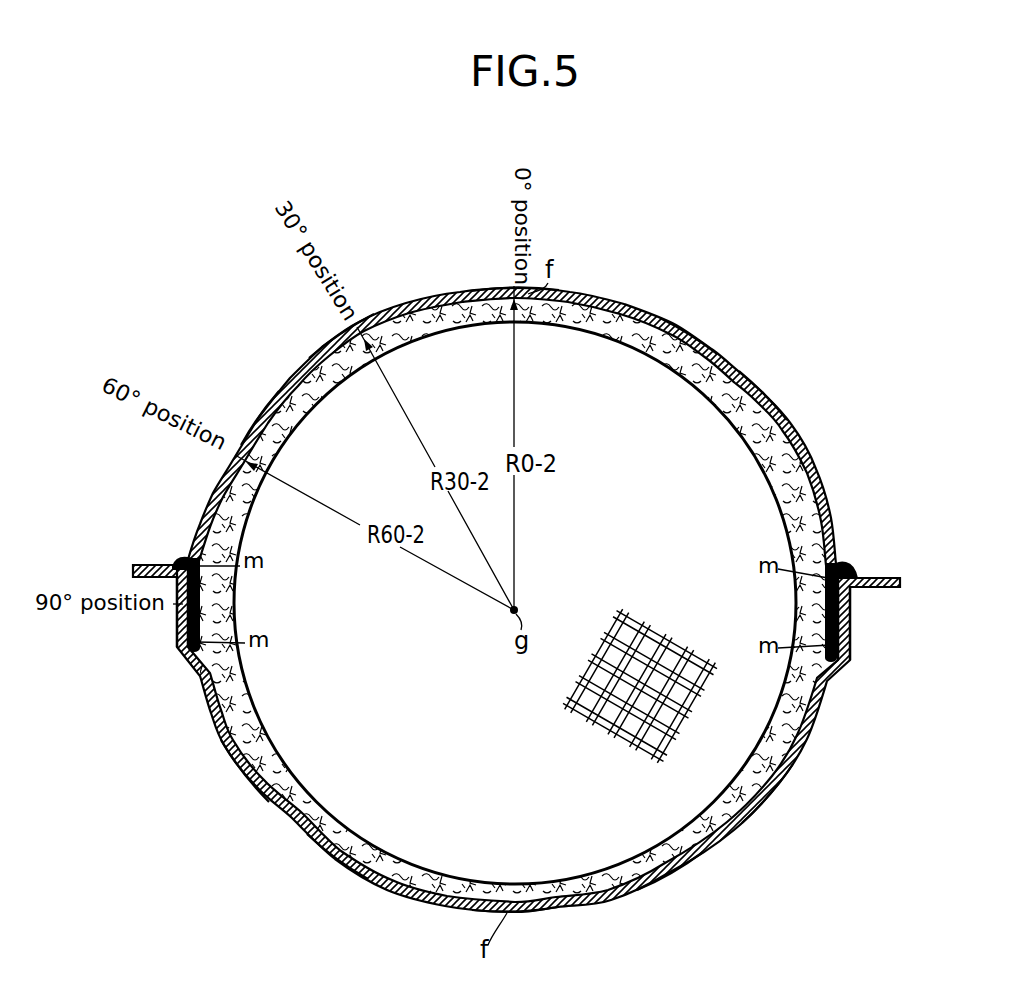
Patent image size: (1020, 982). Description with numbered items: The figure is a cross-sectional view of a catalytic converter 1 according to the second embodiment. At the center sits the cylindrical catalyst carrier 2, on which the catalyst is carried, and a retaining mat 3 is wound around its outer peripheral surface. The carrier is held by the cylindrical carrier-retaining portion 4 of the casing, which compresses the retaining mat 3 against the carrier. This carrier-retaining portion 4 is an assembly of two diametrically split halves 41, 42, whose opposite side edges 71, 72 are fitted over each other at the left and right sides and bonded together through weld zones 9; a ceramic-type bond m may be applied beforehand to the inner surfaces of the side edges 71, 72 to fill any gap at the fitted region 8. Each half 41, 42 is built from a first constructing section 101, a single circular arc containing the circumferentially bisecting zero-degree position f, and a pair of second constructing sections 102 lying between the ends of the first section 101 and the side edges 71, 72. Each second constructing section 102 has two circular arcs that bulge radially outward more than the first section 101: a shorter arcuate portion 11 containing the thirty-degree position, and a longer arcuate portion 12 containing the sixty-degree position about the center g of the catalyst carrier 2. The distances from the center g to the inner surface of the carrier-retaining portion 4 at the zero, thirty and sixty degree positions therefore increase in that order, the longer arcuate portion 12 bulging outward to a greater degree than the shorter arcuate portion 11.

The catalytic converter 1 is at (504, 604).
The catalyst carrier 2 is at (636, 559).
The retaining mat 3 is at (808, 712).
The cylindrical carrier-retaining portion 4 is at (516, 621).
The half 41 is at (829, 504).
The half 42 is at (615, 893).
The opposite side edge 71 is at (200, 605).
The opposite side edge 72 is at (870, 640).
The flange joint portion 8 is at (504, 600).
The weld zone 9 is at (190, 558).
The first constructing section 101 is at (567, 292).
The second constructing section 102 is at (507, 609).
The shorter arcuate portion 11 is at (337, 340).
The longer arcuate portion 12 is at (512, 616).